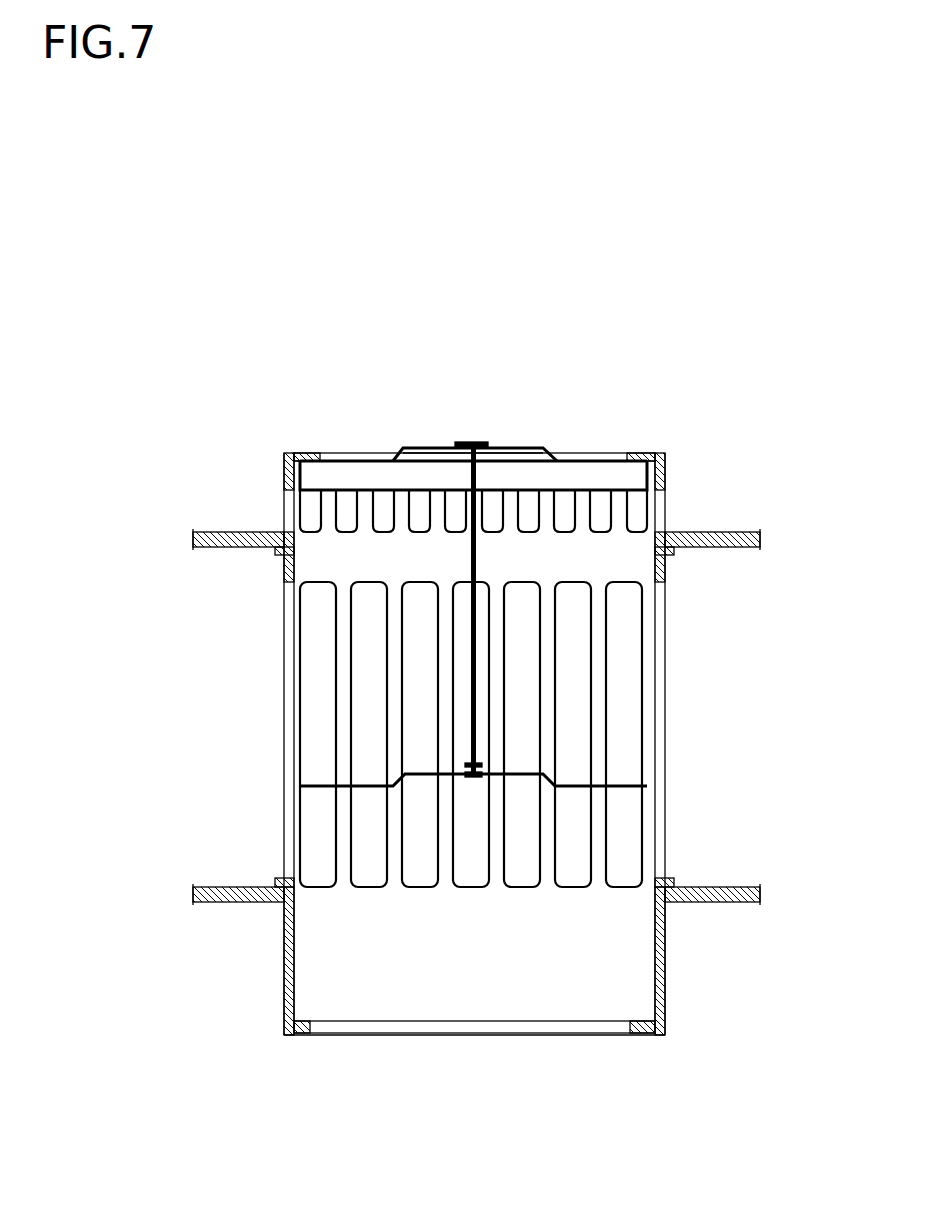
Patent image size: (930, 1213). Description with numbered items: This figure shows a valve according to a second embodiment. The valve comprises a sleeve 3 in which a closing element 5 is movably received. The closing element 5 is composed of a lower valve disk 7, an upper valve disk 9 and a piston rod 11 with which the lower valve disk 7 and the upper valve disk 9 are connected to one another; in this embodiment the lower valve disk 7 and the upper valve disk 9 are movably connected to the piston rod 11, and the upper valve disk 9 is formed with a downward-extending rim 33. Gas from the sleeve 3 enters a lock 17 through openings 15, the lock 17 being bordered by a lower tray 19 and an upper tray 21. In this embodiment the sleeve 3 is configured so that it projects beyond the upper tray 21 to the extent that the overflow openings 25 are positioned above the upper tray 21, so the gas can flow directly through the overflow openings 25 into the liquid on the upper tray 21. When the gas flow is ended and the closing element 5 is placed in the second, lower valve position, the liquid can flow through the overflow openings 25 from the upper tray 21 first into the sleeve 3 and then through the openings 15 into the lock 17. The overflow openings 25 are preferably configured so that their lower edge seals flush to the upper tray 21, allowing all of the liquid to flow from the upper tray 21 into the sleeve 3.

The sleeve 3 is at (666, 573).
The closing element 5 is at (459, 665).
The lower valve disk 7 is at (597, 788).
The upper valve disk 9 is at (519, 447).
The piston rod 11 is at (477, 632).
The opening 15 is at (314, 832).
The lock 17 is at (716, 751).
The lower tray 19 is at (742, 887).
The upper tray 21 is at (728, 533).
The overflow opening 25 is at (284, 520).
The downward-extending rim 33 is at (665, 465).